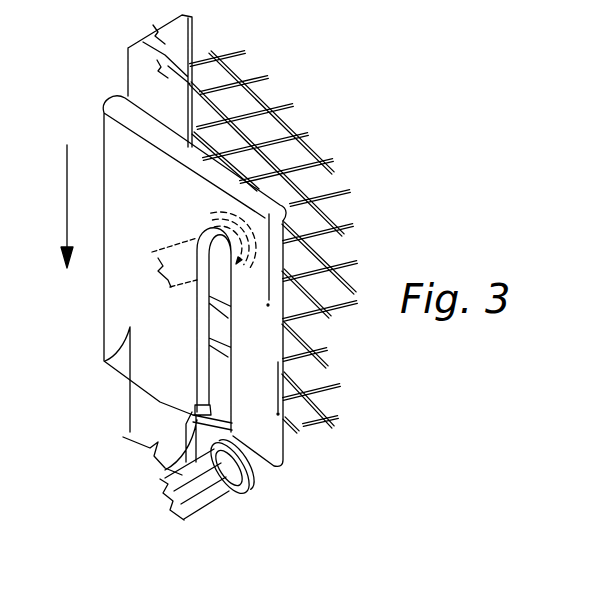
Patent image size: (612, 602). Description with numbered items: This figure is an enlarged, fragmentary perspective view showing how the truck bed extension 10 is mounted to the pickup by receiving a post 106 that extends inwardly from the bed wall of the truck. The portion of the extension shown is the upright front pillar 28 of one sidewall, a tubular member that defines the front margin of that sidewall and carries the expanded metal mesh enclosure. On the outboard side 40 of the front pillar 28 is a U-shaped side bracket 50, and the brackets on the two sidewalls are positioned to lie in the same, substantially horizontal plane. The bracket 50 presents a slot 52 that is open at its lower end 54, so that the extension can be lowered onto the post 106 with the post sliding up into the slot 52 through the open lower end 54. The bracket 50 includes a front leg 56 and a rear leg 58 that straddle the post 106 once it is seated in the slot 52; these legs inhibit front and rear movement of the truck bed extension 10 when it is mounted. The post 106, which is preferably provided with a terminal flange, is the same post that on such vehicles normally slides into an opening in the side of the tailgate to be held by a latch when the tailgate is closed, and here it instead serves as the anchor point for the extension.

The truck bed extension 10 is at (312, 122).
The front pillar 28 is at (128, 48).
The outboard side 40 is at (140, 418).
The U-shaped side bracket 50 is at (106, 361).
The slot 52 is at (190, 370).
The lower end 54 is at (165, 464).
The front leg 56 is at (180, 337).
The rear leg 58 is at (255, 437).
The post 106 is at (203, 502).